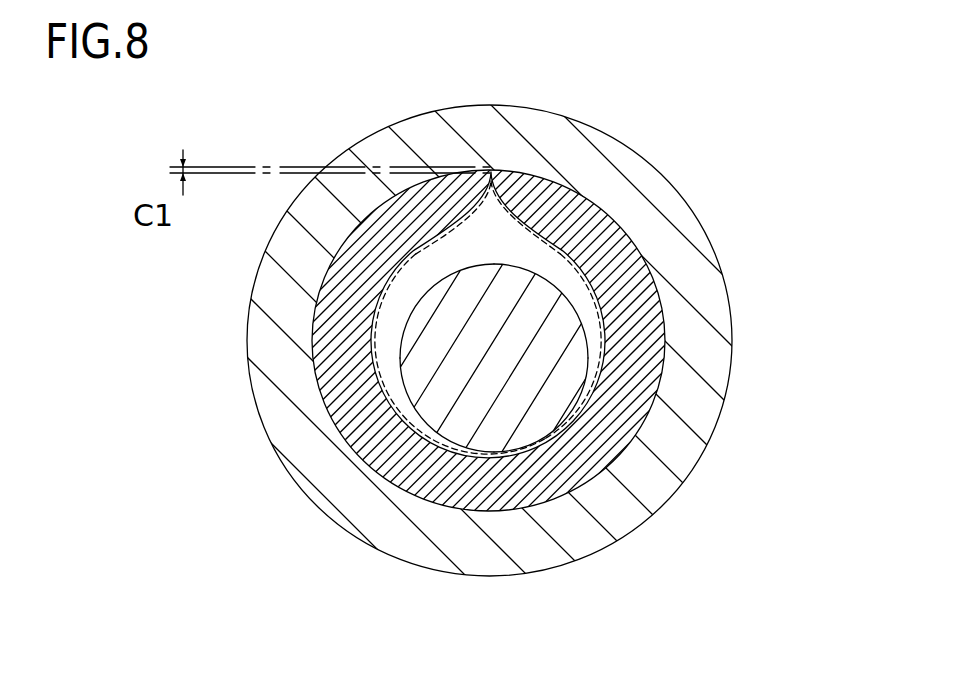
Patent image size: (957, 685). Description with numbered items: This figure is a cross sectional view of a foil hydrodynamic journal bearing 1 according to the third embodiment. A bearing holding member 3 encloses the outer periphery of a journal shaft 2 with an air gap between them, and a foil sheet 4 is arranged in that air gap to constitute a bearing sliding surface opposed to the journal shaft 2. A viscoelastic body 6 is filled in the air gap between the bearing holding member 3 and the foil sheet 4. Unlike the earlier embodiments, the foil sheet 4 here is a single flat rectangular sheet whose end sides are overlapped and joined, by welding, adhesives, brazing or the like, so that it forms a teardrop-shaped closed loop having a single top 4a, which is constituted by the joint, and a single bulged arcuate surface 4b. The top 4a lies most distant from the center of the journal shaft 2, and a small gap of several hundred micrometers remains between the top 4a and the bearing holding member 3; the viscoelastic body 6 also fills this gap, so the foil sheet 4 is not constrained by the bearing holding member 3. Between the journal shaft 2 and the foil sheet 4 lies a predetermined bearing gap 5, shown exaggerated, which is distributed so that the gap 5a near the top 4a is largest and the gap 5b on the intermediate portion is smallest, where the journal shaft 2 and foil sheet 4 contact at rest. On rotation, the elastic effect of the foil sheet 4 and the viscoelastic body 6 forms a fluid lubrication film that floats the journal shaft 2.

The foil hydrodynamic journal bearing 1 is at (665, 140).
The journal shaft 2 is at (630, 242).
The bearing holding member 3 is at (695, 383).
The foil sheet 4 is at (597, 407).
The top 4a is at (493, 170).
The bulged arcuate surface 4b is at (508, 460).
The bearing gap 5 is at (528, 264).
The gap in the vicinity of the top 5a is at (474, 241).
The smallest gap 5b is at (557, 434).
The viscoelastic body 6 is at (653, 296).